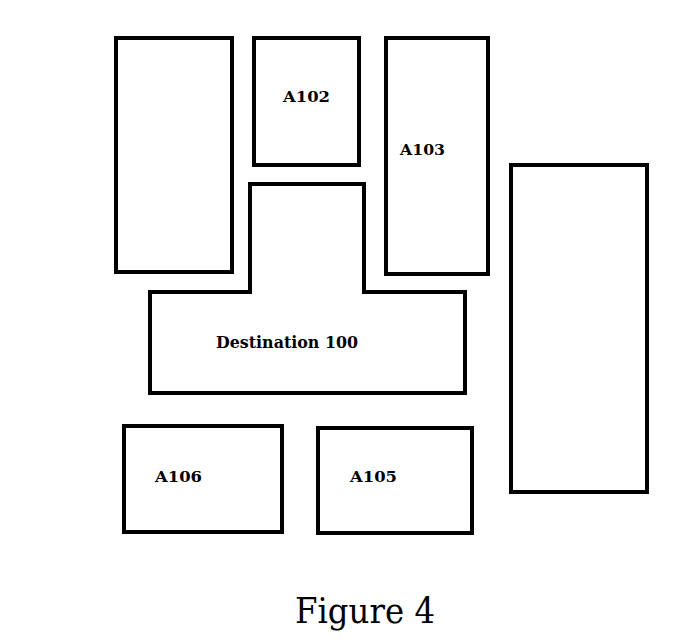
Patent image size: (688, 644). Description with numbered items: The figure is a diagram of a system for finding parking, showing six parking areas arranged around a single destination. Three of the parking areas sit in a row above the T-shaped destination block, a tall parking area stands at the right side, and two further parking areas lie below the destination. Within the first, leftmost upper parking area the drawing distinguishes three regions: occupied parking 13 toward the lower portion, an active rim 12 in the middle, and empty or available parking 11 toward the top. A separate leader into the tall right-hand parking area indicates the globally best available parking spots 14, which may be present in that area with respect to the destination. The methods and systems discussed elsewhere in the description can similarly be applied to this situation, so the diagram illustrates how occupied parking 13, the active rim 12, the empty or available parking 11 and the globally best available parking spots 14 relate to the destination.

The empty or available parking 11 is at (155, 75).
The active rim 12 is at (145, 160).
The occupied parking 13 is at (162, 227).
The globally best available parking spots 14 is at (548, 268).